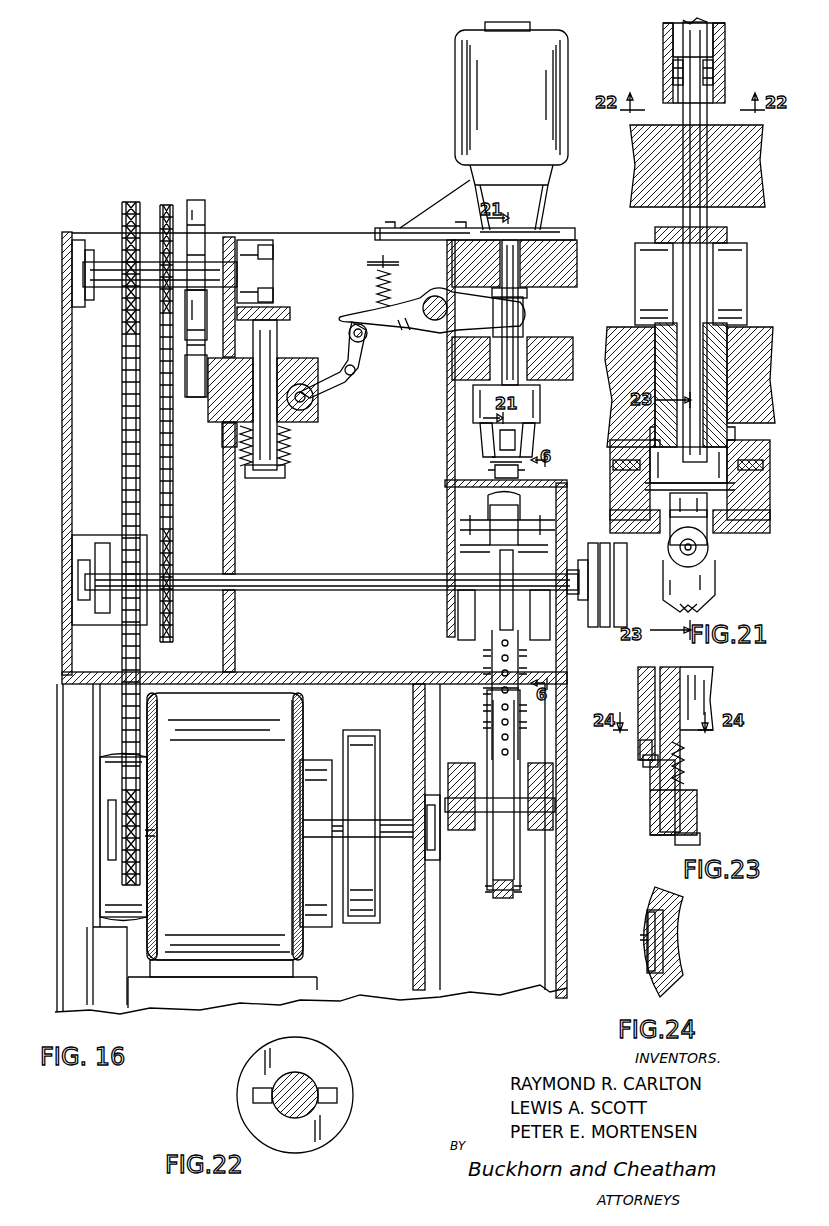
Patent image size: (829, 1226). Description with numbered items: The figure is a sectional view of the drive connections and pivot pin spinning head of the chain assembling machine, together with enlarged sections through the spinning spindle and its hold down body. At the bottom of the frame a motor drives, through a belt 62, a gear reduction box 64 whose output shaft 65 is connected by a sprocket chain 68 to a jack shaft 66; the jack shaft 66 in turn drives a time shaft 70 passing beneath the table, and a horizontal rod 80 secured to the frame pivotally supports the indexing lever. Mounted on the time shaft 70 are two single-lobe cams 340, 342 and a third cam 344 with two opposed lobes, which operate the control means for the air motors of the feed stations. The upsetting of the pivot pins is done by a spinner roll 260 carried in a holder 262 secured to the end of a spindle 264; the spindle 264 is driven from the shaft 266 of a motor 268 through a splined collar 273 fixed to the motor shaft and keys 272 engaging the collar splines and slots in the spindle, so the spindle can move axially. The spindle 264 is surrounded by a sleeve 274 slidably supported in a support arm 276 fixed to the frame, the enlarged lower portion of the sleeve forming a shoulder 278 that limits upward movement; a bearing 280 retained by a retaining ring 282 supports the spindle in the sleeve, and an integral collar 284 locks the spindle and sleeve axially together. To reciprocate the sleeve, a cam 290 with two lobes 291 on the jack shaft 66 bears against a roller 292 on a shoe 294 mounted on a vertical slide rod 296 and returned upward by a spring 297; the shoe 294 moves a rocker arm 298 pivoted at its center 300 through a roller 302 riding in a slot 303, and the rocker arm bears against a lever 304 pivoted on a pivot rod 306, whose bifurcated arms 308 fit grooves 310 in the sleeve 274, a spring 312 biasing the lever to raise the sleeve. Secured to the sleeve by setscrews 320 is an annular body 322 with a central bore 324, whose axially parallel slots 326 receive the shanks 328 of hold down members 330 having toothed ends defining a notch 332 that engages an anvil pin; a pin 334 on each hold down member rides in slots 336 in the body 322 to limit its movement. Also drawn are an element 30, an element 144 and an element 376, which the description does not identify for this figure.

In FIG. 16, the shaft column 30 is at (490, 873).
In FIG. 16, the belt 62 is at (362, 740).
In FIG. 16, the gear reduction box 64 is at (305, 958).
In FIG. 16, the output shaft 65 is at (148, 830).
In FIG. 16, the jack shaft 66 is at (100, 255).
In FIG. 16, the sprocket chain 68 is at (121, 393).
In FIG. 16, the time shaft 70 is at (290, 572).
In FIG. 16, the horizontal rod 80 is at (480, 525).
In FIG. 16, the gear 144 is at (103, 540).
In FIG. 16, the spinner roll 260 is at (540, 440).
In FIG. 21, the spinner roll 260 is at (704, 556).
In FIG. 21, the holder 262 is at (700, 540).
In FIG. 16, the spindle 264 is at (505, 290).
In FIG. 21, the spindle 264 is at (695, 210).
In FIG. 22, the spindle 264 is at (300, 1080).
In FIG. 21, the shaft 266 is at (675, 34).
In FIG. 16, the motor 268 is at (470, 103).
In FIG. 21, the keys 272 is at (675, 75).
In FIG. 22, the keys 272 is at (325, 1093).
In FIG. 21, the splined collar 273 is at (715, 72).
In FIG. 22, the splined collar 273 is at (345, 1108).
In FIG. 16, the sleeve 274 is at (515, 350).
In FIG. 21, the sleeve 274 is at (727, 233).
In FIG. 16, the support arm 276 is at (550, 355).
In FIG. 21, the support arm 276 is at (745, 338).
In FIG. 21, the shoulder 278 is at (735, 440).
In FIG. 21, the bearing 280 is at (688, 465).
In FIG. 21, the retaining ring 282 is at (655, 488).
In FIG. 21, the integral collar 284 is at (652, 437).
In FIG. 16, the cam 290 is at (203, 248).
In FIG. 16, the lobes 291 is at (197, 300).
In FIG. 16, the roller 292 is at (197, 400).
In FIG. 16, the shoe 294 is at (290, 360).
In FIG. 16, the vertical slide rod 296 is at (283, 335).
In FIG. 16, the spring 297 is at (290, 468).
In FIG. 16, the rocker arm 298 is at (345, 395).
In FIG. 16, the center 300 is at (360, 373).
In FIG. 16, the roller 302 is at (312, 408).
In FIG. 16, the slot 303 is at (288, 448).
In FIG. 16, the lever 304 is at (430, 325).
In FIG. 16, the pivot rod 306 is at (436, 297).
In FIG. 16, the arms 308 is at (524, 322).
In FIG. 21, the arms 308 is at (645, 270).
In FIG. 16, the grooves 310 is at (528, 305).
In FIG. 21, the grooves 310 is at (742, 246).
In FIG. 16, the spring 312 is at (376, 273).
In FIG. 21, the setscrews 320 is at (618, 465).
In FIG. 21, the annular body 322 is at (615, 522).
In FIG. 23, the annular body 322 is at (675, 682).
In FIG. 24, the annular body 322 is at (640, 925).
In FIG. 21, the central bore 324 is at (708, 520).
In FIG. 23, the slots 326 is at (655, 686).
In FIG. 23, the shanks 328 is at (655, 770).
In FIG. 24, the shanks 328 is at (672, 928).
In FIG. 21, the hold down members 330 is at (708, 582).
In FIG. 23, the hold down members 330 is at (655, 800).
In FIG. 21, the notch 332 is at (705, 605).
In FIG. 23, the notch 332 is at (700, 835).
In FIG. 23, the pin 334 is at (645, 755).
In FIG. 23, the slots 336 is at (645, 742).
In FIG. 16, the cam 340 is at (590, 630).
In FIG. 16, the cam 342 is at (605, 630).
In FIG. 16, the cam 344 is at (620, 630).
In FIG. 24, the key 376 is at (652, 905).